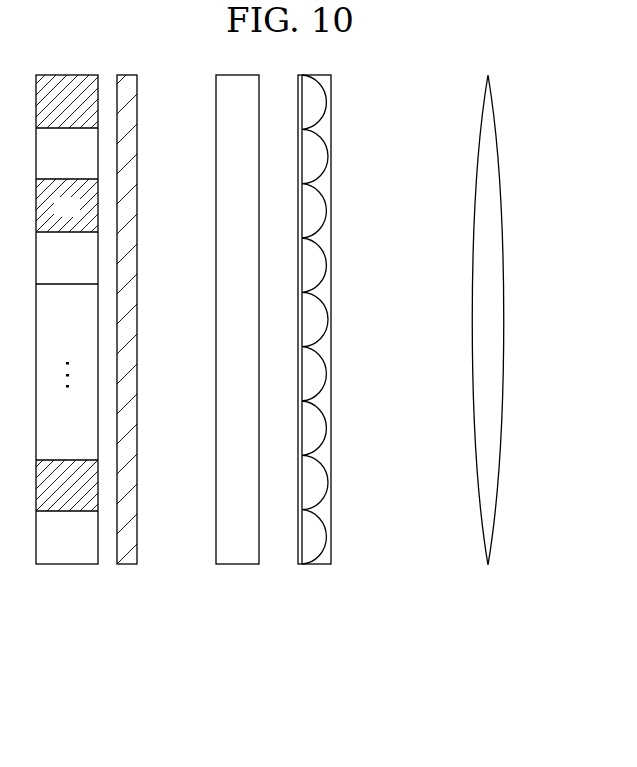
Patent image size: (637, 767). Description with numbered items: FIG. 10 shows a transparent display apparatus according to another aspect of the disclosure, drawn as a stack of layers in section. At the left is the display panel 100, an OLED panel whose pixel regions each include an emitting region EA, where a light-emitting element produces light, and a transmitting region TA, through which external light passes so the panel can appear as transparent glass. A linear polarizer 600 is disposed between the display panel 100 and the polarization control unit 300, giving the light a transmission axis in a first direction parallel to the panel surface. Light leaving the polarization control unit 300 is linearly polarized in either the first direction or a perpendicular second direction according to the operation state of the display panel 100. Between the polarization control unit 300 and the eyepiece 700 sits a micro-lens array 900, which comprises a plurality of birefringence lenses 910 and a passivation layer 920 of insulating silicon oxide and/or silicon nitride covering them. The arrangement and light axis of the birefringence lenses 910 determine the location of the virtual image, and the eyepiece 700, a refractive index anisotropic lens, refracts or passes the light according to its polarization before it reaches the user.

The display panel 100 is at (68, 565).
The linear polarizer 600 is at (128, 565).
The polarization control unit 300 is at (239, 565).
The micro-lens array 900 is at (317, 367).
The birefringence lens 910 is at (310, 548).
The passivation layer 920 is at (327, 345).
The eyepiece 700 is at (488, 565).